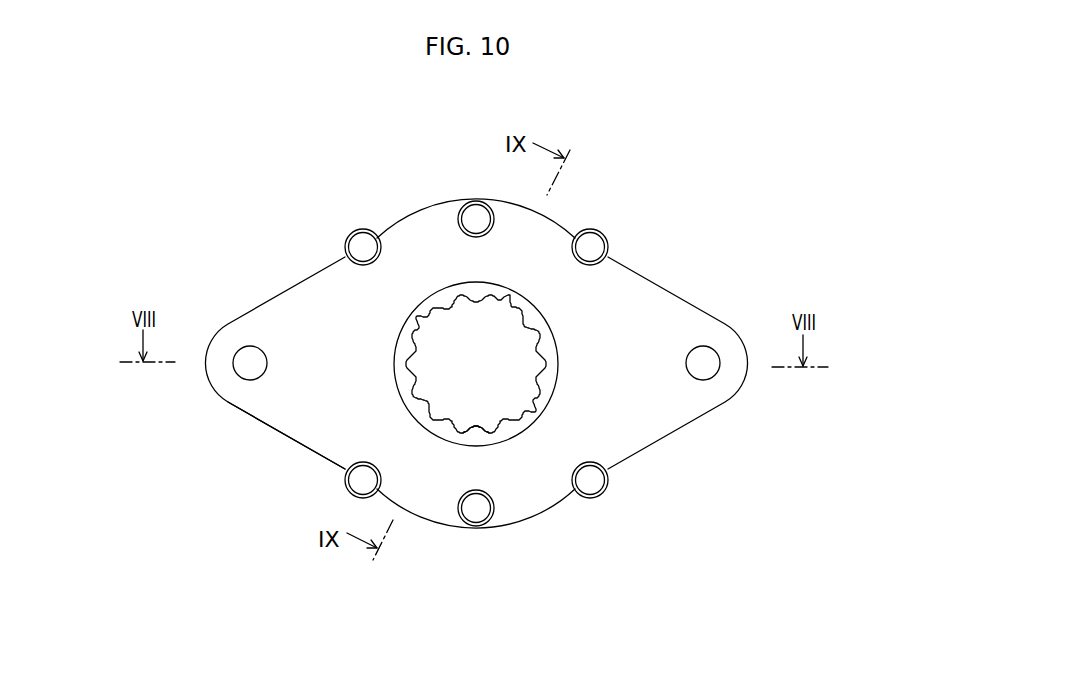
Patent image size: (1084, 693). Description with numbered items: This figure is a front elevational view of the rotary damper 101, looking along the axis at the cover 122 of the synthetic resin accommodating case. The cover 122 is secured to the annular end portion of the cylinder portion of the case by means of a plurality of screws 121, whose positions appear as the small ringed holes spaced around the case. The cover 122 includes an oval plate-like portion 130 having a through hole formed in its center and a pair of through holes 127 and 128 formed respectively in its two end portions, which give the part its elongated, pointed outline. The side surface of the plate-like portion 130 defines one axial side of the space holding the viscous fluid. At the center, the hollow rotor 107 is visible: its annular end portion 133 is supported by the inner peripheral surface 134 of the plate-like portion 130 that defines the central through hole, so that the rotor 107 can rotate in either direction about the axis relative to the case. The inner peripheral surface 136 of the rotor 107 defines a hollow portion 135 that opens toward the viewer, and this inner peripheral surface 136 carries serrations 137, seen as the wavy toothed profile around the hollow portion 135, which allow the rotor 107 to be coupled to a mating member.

The rotary damper 101 is at (699, 297).
The rotor 107 is at (433, 300).
The screws 121 is at (592, 247).
The cover 122 is at (254, 427).
The through hole 127 is at (250, 363).
The through hole 128 is at (703, 366).
The plate-like portion 130 is at (543, 488).
The annular end portion 133 is at (460, 438).
The inner peripheral surface 134 is at (409, 321).
The hollow portion 135 is at (498, 345).
The inner peripheral surface 136 is at (533, 403).
The serrations 137 is at (508, 302).